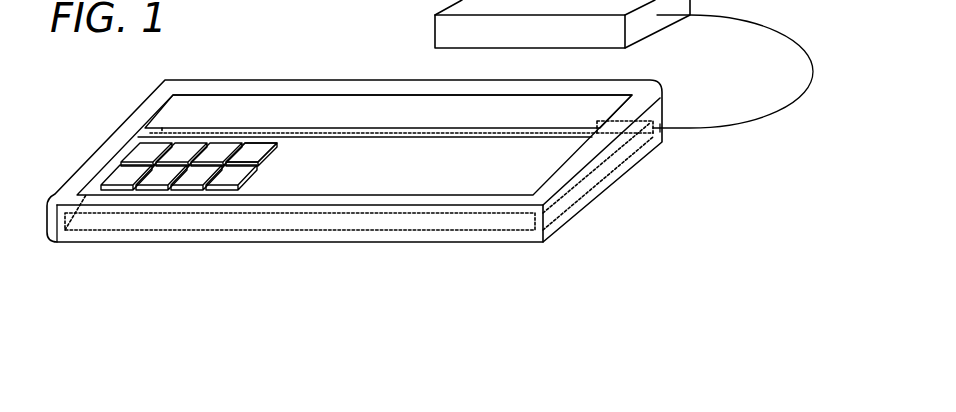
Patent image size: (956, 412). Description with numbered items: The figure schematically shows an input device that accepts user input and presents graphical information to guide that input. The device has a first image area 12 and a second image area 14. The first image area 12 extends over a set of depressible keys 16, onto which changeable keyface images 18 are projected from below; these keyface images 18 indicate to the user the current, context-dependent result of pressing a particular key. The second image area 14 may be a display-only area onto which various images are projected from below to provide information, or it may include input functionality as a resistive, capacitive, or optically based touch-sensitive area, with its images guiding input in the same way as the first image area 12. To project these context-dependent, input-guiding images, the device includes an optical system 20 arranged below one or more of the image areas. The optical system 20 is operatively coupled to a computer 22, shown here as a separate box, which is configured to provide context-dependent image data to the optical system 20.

The first image area 12 is at (403, 195).
The second image area 14 is at (403, 95).
The depressible keys 16 is at (268, 184).
The changeable keyface images 18 is at (260, 150).
The optical system 20 is at (592, 188).
The computer 22 is at (542, 44).